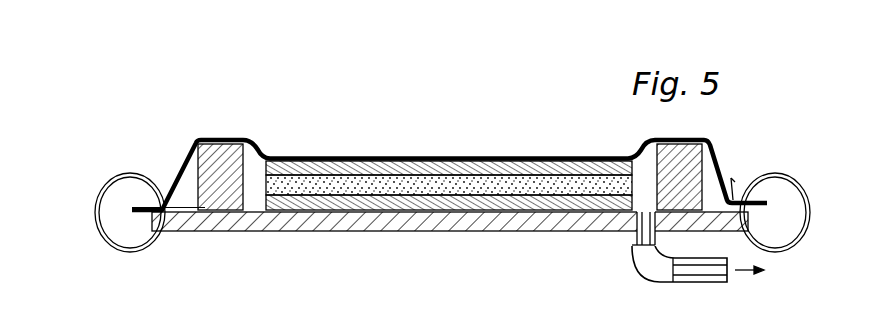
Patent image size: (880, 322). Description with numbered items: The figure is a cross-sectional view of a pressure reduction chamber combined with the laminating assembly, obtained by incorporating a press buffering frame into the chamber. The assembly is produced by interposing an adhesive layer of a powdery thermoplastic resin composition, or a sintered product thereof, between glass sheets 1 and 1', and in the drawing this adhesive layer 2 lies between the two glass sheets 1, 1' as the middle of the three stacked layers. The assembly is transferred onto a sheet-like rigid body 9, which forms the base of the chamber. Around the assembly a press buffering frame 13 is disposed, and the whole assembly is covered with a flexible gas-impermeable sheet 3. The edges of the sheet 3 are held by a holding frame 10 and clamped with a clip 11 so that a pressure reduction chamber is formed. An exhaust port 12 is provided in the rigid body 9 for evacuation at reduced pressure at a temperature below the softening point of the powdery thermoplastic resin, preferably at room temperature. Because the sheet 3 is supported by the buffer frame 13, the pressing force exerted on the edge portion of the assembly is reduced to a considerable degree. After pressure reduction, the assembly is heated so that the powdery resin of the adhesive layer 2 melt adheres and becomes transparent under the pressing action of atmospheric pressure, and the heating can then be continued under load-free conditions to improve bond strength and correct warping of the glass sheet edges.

The glass sheet 1 is at (449, 145).
The glass sheet 1' is at (449, 244).
The electrolyte layer 2 is at (553, 176).
The flexible gas-impermeable sheet 3 is at (273, 158).
The sheet-like rigid body 9 is at (222, 226).
The holding frame 10 is at (174, 200).
The clip 11 is at (147, 253).
The exhaust port 12 is at (633, 233).
The press buffering frame 13 is at (222, 147).